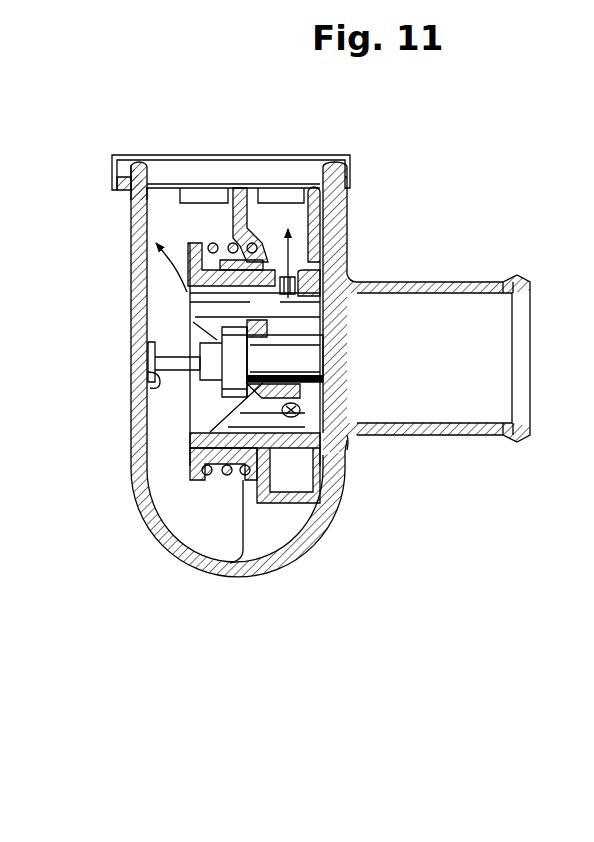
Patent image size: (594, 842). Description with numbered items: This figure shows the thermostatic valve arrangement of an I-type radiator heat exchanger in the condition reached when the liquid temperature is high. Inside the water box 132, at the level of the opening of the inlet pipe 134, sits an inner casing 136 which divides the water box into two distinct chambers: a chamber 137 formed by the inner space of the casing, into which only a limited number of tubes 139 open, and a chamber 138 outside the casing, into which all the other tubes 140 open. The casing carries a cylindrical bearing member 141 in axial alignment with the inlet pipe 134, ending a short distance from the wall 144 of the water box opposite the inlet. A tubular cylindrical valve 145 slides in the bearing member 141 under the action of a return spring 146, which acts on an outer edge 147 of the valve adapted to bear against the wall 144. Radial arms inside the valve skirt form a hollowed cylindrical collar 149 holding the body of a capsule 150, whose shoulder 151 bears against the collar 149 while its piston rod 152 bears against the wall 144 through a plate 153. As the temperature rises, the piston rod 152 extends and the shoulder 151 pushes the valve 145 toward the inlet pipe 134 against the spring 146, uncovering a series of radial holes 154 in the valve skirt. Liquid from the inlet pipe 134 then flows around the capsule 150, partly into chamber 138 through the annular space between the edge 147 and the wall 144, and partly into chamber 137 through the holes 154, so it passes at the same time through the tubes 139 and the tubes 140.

The water box 132 is at (167, 556).
The inlet pipe 134 is at (440, 283).
The inner casing 136 is at (292, 506).
The chamber 137 is at (312, 212).
The chamber 138 is at (158, 199).
The tubes 139 is at (276, 194).
The tubes 140 is at (205, 194).
The cylindrical bearing member 141 is at (205, 462).
The wall 144 is at (137, 245).
The tubular cylindrical valve 145 is at (200, 421).
The return spring 146 is at (227, 476).
The outer edge 147 is at (178, 248).
The hollowed cylindrical collar 149 is at (273, 295).
The capsule 150 is at (318, 354).
The shoulder 151 is at (222, 385).
The piston rod 152 is at (151, 342).
The plate 153 is at (148, 380).
The radial holes 154 is at (300, 410).